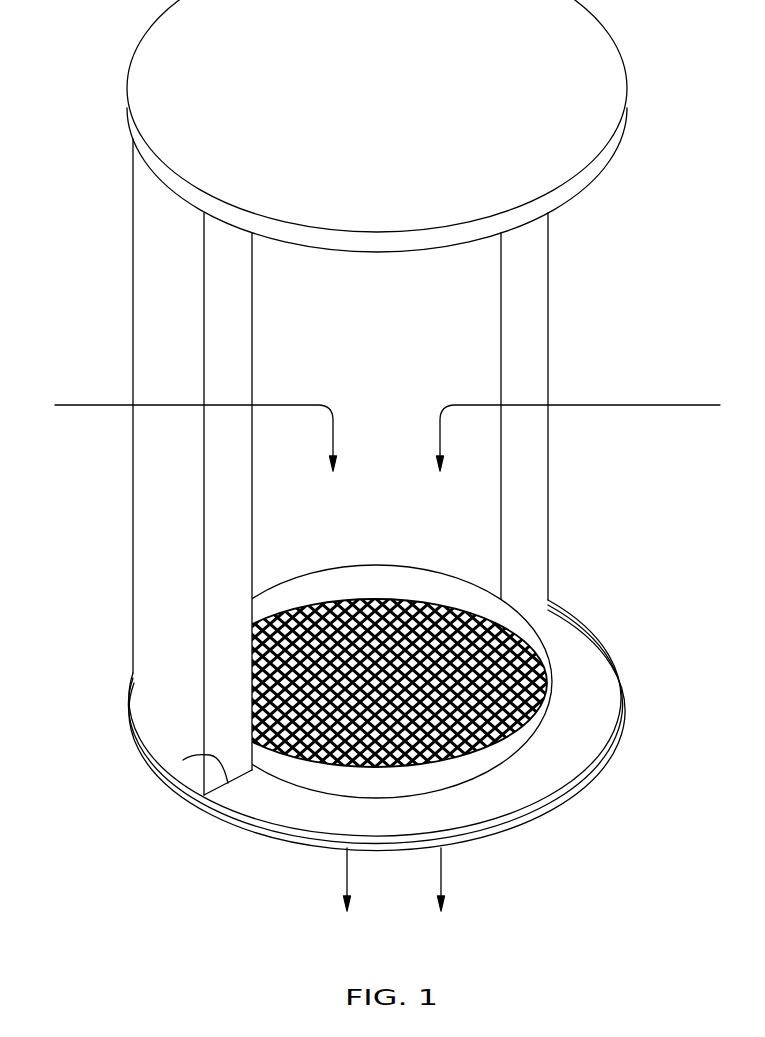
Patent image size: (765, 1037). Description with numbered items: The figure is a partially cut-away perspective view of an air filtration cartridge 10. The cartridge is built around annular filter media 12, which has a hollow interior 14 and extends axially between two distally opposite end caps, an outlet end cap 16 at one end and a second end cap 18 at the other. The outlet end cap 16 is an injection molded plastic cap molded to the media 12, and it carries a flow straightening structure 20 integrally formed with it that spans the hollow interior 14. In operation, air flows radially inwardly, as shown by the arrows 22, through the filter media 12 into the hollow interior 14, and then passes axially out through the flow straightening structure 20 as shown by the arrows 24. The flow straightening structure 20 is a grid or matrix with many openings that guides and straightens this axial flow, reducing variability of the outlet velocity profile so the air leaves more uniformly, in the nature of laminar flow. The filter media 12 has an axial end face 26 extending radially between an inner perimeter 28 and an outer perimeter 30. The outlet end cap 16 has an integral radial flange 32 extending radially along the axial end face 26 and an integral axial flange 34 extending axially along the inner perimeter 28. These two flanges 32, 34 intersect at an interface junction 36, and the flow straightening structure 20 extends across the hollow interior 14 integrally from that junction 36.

The air filtration cartridge 10 is at (85, 300).
The annular filter media 12 is at (153, 452).
The hollow interior 14 is at (398, 381).
The outlet end cap 16 is at (583, 618).
The second end cap 18 is at (620, 138).
The flow straightening structure 20 is at (480, 687).
The arrows (radially inward air flow) 22 is at (88, 405).
The arrows (axial outlet air flow) 24 is at (441, 877).
The axial end face 26 is at (183, 760).
The inner perimeter 28 is at (253, 522).
The outer perimeter 30 is at (204, 513).
The radial flange 32 is at (580, 752).
The axial flange 34 is at (507, 750).
The interface junction 36 is at (553, 714).